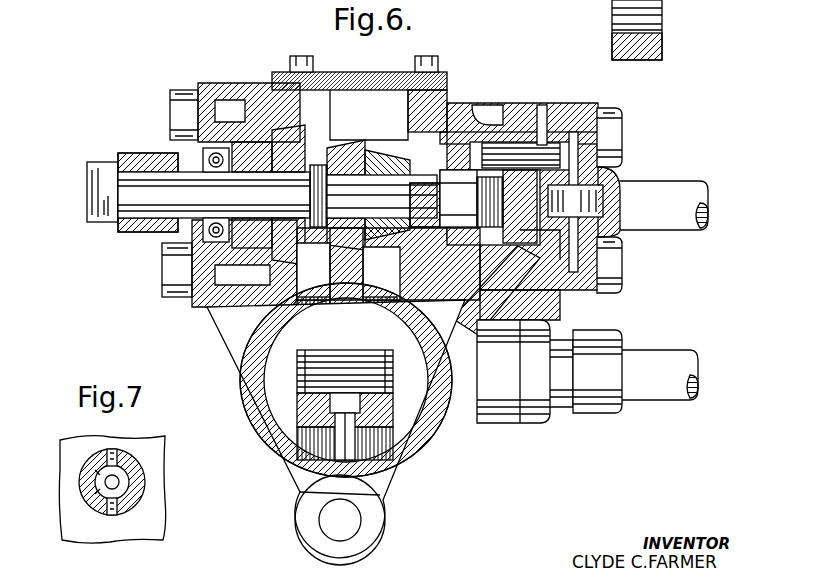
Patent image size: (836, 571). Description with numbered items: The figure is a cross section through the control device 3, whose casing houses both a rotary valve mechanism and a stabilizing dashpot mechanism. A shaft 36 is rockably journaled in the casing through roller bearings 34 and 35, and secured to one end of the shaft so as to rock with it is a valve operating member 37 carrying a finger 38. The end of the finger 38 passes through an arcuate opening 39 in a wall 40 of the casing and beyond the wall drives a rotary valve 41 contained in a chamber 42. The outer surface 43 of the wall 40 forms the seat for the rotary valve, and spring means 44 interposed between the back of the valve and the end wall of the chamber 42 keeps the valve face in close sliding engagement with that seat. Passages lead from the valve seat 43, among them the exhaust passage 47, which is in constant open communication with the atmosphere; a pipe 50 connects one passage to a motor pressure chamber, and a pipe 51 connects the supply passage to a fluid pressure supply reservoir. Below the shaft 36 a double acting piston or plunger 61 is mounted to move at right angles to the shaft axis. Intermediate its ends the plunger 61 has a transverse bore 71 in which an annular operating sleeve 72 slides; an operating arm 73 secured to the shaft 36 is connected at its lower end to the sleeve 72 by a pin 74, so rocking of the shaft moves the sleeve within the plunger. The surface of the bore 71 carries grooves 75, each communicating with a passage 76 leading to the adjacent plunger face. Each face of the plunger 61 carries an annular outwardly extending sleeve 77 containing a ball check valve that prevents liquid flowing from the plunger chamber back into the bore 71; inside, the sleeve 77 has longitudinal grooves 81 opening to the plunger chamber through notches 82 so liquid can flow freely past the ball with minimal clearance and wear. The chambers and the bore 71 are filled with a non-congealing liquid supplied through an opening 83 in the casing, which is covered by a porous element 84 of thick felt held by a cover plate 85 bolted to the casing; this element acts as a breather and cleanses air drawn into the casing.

In FIG. 6, the control device 3 is at (473, 90).
In FIG. 6, the roller bearing 34 is at (298, 138).
In FIG. 6, the roller bearing 35 is at (420, 137).
In FIG. 6, the shaft 36 is at (142, 185).
In FIG. 6, the valve operating member 37 is at (490, 213).
In FIG. 6, the finger 38 is at (532, 150).
In FIG. 6, the arcuate opening 39 is at (522, 140).
In FIG. 6, the wall 40 is at (512, 229).
In FIG. 6, the rotary valve 41 is at (573, 150).
In FIG. 6, the chamber 42 is at (582, 143).
In FIG. 6, the outer surface 43 is at (456, 198).
In FIG. 6, the spring means 44 is at (613, 175).
In FIG. 6, the exhaust passage 47 is at (493, 297).
In FIG. 6, the pipe 50 is at (673, 203).
In FIG. 6, the pipe 51 is at (660, 370).
In FIG. 6, the double acting piston or plunger 61 is at (275, 363).
In FIG. 7, the double acting piston or plunger 61 is at (147, 512).
In FIG. 6, the transverse bore 71 is at (378, 295).
In FIG. 6, the annular operating sleeve 72 is at (310, 408).
In FIG. 6, the operating arm 73 is at (347, 278).
In FIG. 6, the pin 74 is at (310, 370).
In FIG. 6, the grooves 75 is at (343, 438).
In FIG. 7, the passage 76 is at (116, 482).
In FIG. 7, the sleeve 77 is at (137, 468).
In FIG. 7, the longitudinal grooves 81 is at (95, 500).
In FIG. 7, the notches 82 is at (110, 456).
In FIG. 6, the opening 83 is at (332, 100).
In FIG. 6, the porous element 84 is at (275, 88).
In FIG. 6, the cover plate 85 is at (397, 80).